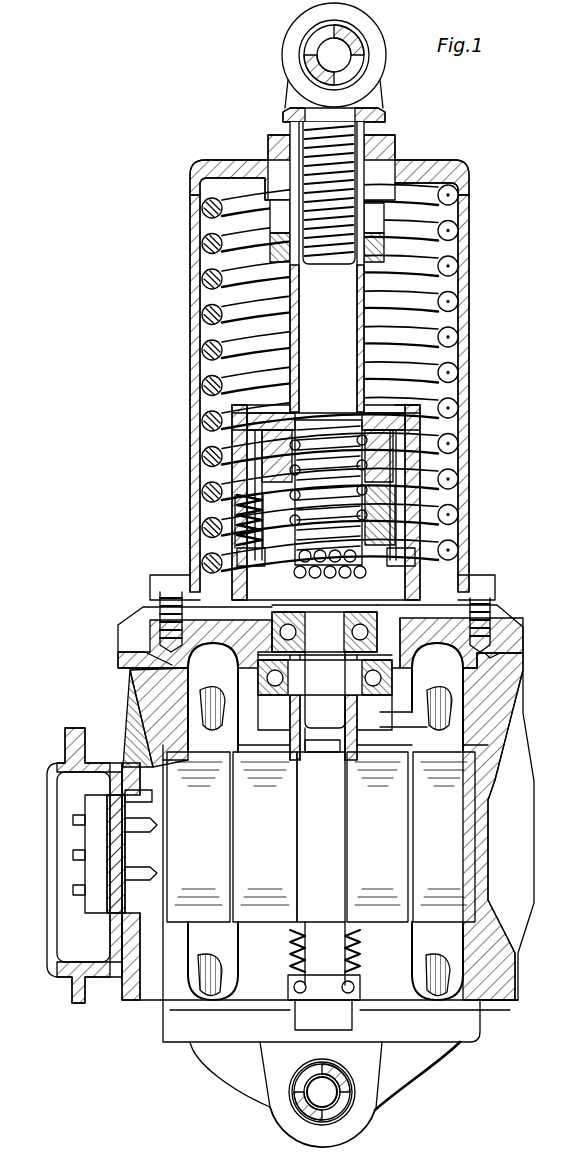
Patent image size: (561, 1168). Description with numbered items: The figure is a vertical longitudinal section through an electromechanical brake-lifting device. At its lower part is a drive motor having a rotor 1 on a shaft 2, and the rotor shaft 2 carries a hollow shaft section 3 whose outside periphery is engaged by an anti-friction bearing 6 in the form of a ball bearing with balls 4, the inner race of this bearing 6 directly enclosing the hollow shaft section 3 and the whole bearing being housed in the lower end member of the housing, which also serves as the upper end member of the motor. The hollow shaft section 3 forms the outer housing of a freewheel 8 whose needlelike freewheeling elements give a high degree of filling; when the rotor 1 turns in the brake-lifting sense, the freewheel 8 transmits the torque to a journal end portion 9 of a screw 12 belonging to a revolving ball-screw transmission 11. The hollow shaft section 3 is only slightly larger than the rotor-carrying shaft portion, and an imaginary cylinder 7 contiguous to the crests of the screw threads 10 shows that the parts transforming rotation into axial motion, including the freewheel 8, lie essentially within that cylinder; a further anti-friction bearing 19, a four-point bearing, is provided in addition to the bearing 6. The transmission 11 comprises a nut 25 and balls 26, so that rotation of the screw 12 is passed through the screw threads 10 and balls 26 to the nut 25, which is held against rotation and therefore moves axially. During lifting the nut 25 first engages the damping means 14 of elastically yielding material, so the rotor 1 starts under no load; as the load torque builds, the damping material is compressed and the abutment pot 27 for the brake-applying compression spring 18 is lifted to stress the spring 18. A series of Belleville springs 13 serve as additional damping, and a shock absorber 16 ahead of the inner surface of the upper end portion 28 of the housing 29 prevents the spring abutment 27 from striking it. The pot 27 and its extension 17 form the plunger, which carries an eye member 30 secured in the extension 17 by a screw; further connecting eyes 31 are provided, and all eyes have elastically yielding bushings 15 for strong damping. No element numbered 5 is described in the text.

The rotor 1 is at (392, 848).
The shaft 2 is at (330, 836).
The hollow shaft section 3 is at (463, 730).
The balls 4 is at (388, 680).
The motor housing 5 is at (522, 640).
The anti-friction bearing 6 is at (135, 688).
The imaginary cylinder 7 is at (336, 424).
The freewheel 8 is at (325, 690).
The journal end portion 9 is at (330, 748).
The screw threads 10 is at (264, 468).
The revolving ball-screw transmission 11 is at (433, 515).
The screw 12 is at (402, 440).
The Belleville springs 13 is at (232, 516).
The damping means 14 is at (230, 482).
The bushings 15 is at (362, 36).
The shock absorber 16 is at (386, 246).
The extension 17 is at (352, 330).
The brake-applying compression spring 18 is at (197, 292).
The anti-friction bearing 19 is at (172, 590).
The nut 25 is at (282, 578).
The balls 26 is at (336, 600).
The abutment pot 27 is at (452, 592).
The upper end portion 28 is at (206, 178).
The housing 29 is at (196, 232).
The eye member 30 is at (292, 68).
The connecting eyes 31 is at (280, 1108).